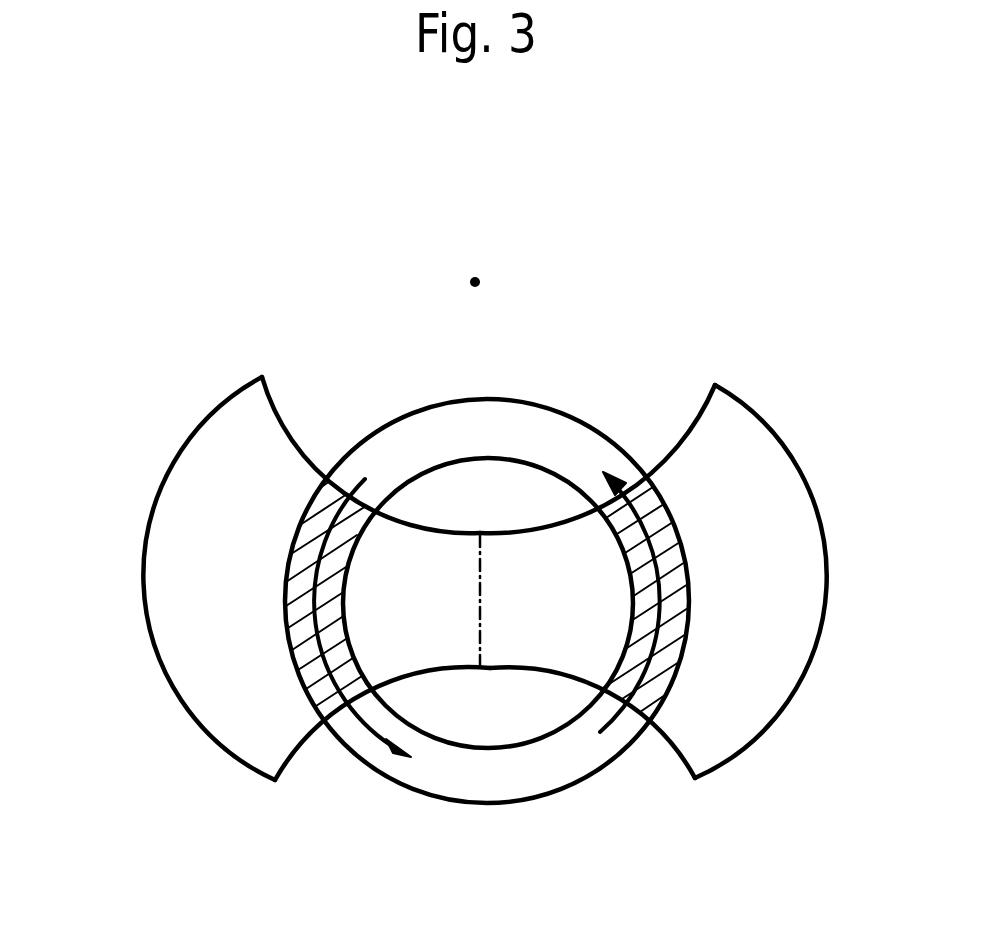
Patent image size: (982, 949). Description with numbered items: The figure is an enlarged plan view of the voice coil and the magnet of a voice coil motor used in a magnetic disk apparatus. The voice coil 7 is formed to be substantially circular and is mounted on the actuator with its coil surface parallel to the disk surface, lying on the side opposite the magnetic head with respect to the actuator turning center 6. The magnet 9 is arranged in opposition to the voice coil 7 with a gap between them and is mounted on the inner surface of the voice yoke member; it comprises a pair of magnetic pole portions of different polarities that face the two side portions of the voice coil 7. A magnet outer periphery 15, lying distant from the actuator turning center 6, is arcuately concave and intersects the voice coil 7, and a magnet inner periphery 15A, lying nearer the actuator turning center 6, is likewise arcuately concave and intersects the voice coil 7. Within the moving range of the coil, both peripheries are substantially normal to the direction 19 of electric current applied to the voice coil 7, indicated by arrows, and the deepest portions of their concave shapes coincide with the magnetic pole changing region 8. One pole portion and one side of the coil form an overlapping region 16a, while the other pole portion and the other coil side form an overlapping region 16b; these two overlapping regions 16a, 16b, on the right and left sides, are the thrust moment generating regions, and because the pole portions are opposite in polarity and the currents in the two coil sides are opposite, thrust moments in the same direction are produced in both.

The actuator turning center 6 is at (478, 281).
The voice coil 7 is at (442, 432).
The magnetic pole changing region 8 is at (482, 622).
The magnet 9 is at (230, 710).
The magnet outer periphery 15 is at (580, 688).
The magnet inner periphery 15A is at (662, 447).
The overlapping region 16a is at (310, 663).
The overlapping region 16b is at (672, 552).
The direction of electric current 19 is at (360, 733).